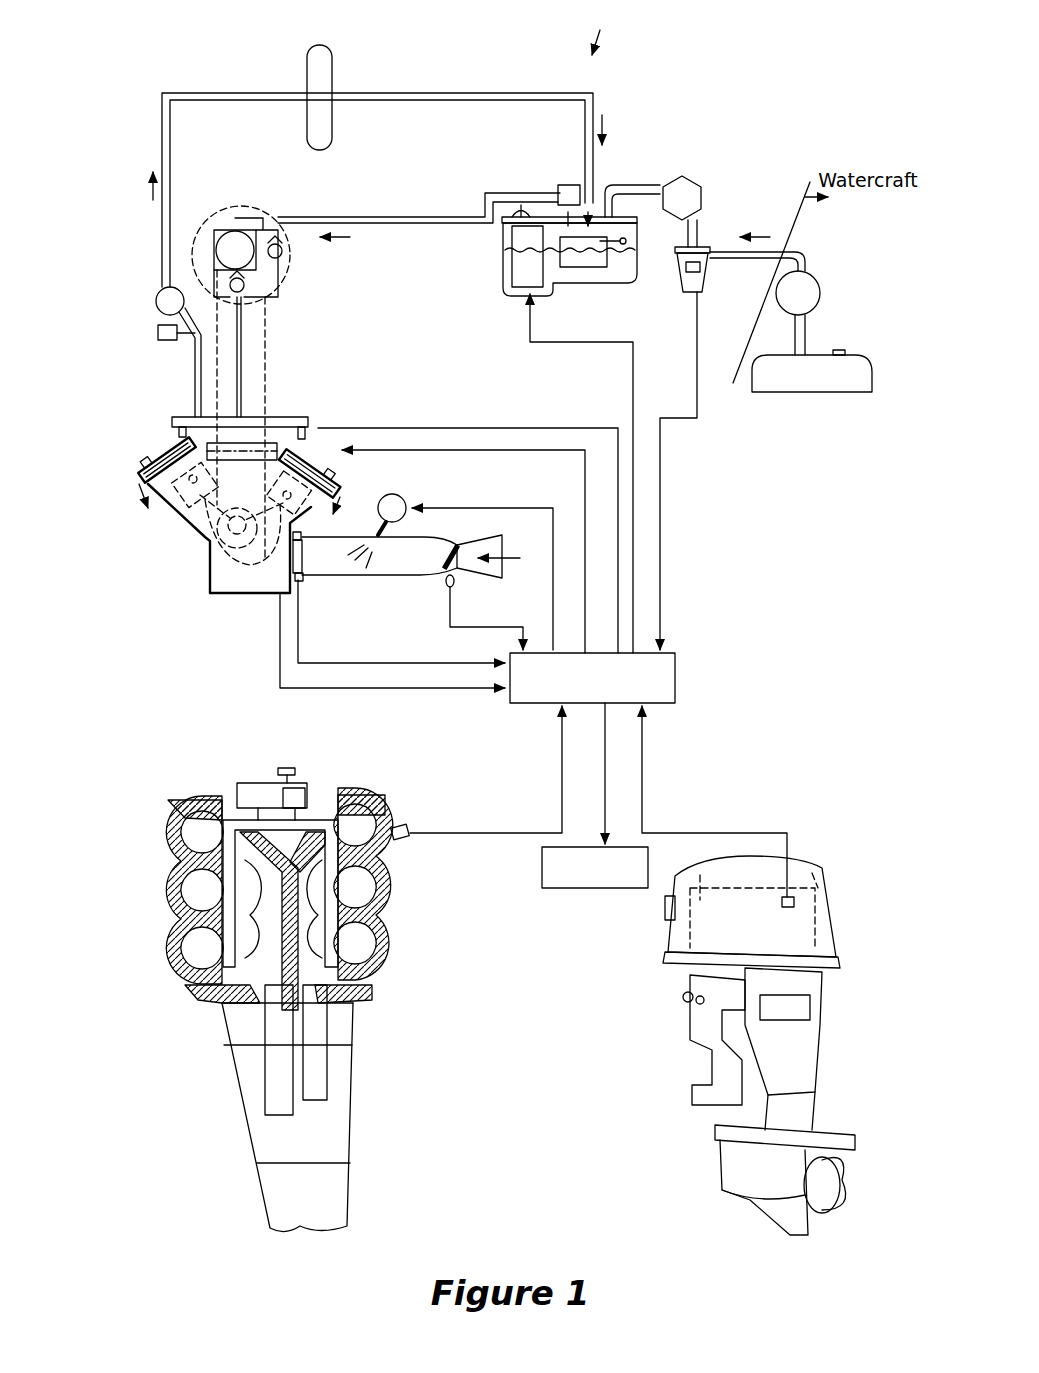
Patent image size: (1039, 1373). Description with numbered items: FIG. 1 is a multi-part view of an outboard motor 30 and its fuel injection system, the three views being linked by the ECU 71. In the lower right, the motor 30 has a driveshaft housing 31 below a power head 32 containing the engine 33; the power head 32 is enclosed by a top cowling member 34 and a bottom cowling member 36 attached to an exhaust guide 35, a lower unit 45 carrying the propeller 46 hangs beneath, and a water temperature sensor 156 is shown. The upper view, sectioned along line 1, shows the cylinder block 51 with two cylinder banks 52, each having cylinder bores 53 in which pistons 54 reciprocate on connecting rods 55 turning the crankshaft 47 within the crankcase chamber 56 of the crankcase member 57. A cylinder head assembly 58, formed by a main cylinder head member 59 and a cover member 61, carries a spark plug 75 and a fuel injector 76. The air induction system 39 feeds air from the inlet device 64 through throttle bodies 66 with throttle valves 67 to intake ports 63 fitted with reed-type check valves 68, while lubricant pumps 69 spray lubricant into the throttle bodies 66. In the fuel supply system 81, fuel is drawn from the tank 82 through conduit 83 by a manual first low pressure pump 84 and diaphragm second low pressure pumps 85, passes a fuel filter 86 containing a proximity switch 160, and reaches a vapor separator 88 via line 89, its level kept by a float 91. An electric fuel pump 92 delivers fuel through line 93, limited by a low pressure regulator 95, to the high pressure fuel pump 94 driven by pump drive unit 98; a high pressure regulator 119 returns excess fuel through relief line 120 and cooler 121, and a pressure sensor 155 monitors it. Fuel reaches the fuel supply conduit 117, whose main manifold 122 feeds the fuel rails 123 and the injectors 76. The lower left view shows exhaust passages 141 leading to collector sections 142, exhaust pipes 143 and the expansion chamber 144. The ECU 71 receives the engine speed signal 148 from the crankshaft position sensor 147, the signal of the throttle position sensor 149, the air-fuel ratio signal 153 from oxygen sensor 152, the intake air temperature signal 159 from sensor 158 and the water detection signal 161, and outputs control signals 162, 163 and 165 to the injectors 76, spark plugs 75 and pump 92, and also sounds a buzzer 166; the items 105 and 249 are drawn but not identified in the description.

The section line 1 is at (239, 508).
The outboard motor 30 is at (816, 836).
The driveshaft housing 31 is at (353, 1140).
The power head 32 is at (664, 987).
The internal combustion engine 33 is at (432, 913).
The top cowling member 34 is at (668, 926).
The exhaust guide 35 is at (342, 1025).
The bottom cowling member 36 is at (848, 956).
The air induction system 39 is at (418, 530).
The lower unit 45 is at (722, 1157).
The propeller 46 is at (818, 1220).
The crankshaft 47 is at (250, 563).
The cylinder block 51 is at (178, 500).
The cylinder banks 52 is at (190, 520).
The cylinder bores 53 is at (182, 826).
The pistons 54 is at (192, 517).
The connecting rods 55 is at (215, 541).
The crankcase chamber 56 is at (232, 570).
The crankcase member 57 is at (225, 567).
The cylinder head assembly 58 is at (122, 486).
The main cylinder head member 59 is at (140, 493).
The cylinder head cover member 61 is at (140, 462).
The intake port 63 is at (297, 582).
The air silencing and inlet device 64 is at (488, 532).
The throttle bodies 66 is at (395, 578).
The throttle valve 67 is at (446, 568).
The reed-type check valves 68 is at (308, 552).
The lubricant pumps 69 is at (398, 498).
The ECU 71 is at (676, 680).
The spark plug 75 is at (148, 446).
The fuel injector 76 is at (178, 432).
The fuel supply system 81 is at (609, 29).
The main fuel supply tank 82 is at (813, 378).
The conduit 83 is at (806, 335).
The first low pressure pump 84 is at (805, 272).
The second low pressure pumps 85 is at (703, 200).
The fuel filter 86 is at (712, 282).
The vapor separator 88 is at (638, 267).
The line 89 is at (637, 185).
The float 91 is at (593, 260).
The high pressure electric fuel pump 92 is at (535, 265).
The fuel supply line 93 is at (403, 217).
The high pressure fuel pump 94 is at (226, 195).
The low pressure regulator 95 is at (567, 185).
The pump drive unit 98 is at (298, 795).
The pump drive 105 is at (213, 300).
The fuel supply conduit 117 is at (276, 405).
The high pressure regulator 119 is at (165, 300).
The pressure relief line 120 is at (470, 92).
The fuel cooler 121 is at (320, 62).
The main fuel manifold 122 is at (180, 417).
The fuel rails 123 is at (183, 952).
The exhaust passage 141 is at (247, 852).
The manifold collector sections 142 is at (267, 1003).
The exhaust pipes 143 is at (262, 1075).
The expansion chamber 144 is at (315, 1150).
The crankshaft angle position sensor 147 is at (268, 560).
The engine speed signal 148 is at (422, 690).
The throttle position sensor 149 is at (458, 580).
The oxygen sensor 152 is at (408, 827).
The air fuel ratio signal 153 is at (560, 803).
The pressure sensor 155 is at (158, 333).
The water temperature sensor 156 is at (797, 905).
The intake air temperature sensor 158 is at (401, 621).
The intake air temperature signal 159 is at (355, 666).
The proximity switch 160 is at (723, 250).
The water detection signal 161 is at (663, 515).
The fuel injector control signal 162 is at (531, 452).
The spark plug control signal 163 is at (512, 427).
The electric fuel pump control signal 165 is at (633, 402).
The buzzer 166 is at (580, 890).
The signal line 249 is at (643, 772).